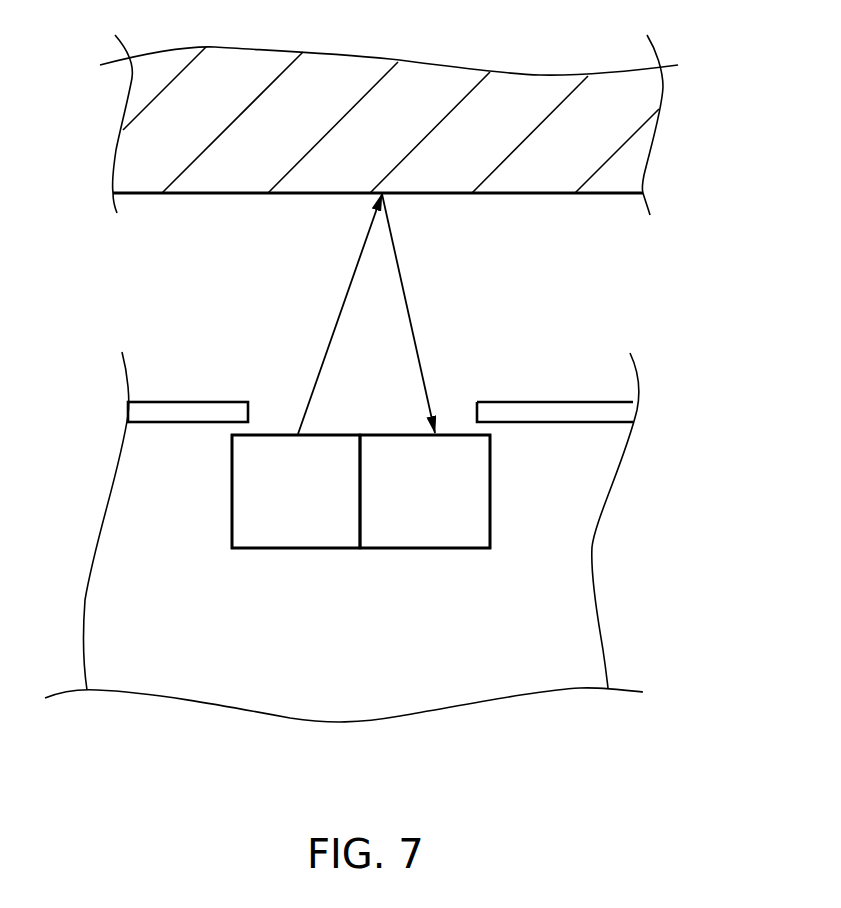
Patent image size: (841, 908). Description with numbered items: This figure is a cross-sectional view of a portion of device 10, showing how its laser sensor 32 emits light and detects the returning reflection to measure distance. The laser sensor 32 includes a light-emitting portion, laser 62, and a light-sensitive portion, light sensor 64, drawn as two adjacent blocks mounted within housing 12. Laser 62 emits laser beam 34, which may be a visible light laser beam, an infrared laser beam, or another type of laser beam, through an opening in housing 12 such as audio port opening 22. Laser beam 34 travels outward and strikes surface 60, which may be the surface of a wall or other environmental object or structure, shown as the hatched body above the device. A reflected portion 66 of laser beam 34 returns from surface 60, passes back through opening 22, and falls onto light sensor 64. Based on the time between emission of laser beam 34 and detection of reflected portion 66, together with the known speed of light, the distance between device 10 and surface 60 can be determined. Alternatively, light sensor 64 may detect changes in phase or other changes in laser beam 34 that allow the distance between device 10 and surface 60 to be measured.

The device 10 is at (580, 475).
The housing 12 is at (198, 412).
The audio port opening 22 is at (478, 386).
The laser sensor 32 is at (361, 534).
The laser beam 34 is at (348, 292).
The surface 60 is at (550, 194).
The laser 62 is at (287, 530).
The light sensor 64 is at (462, 528).
The reflected portion 66 is at (403, 278).